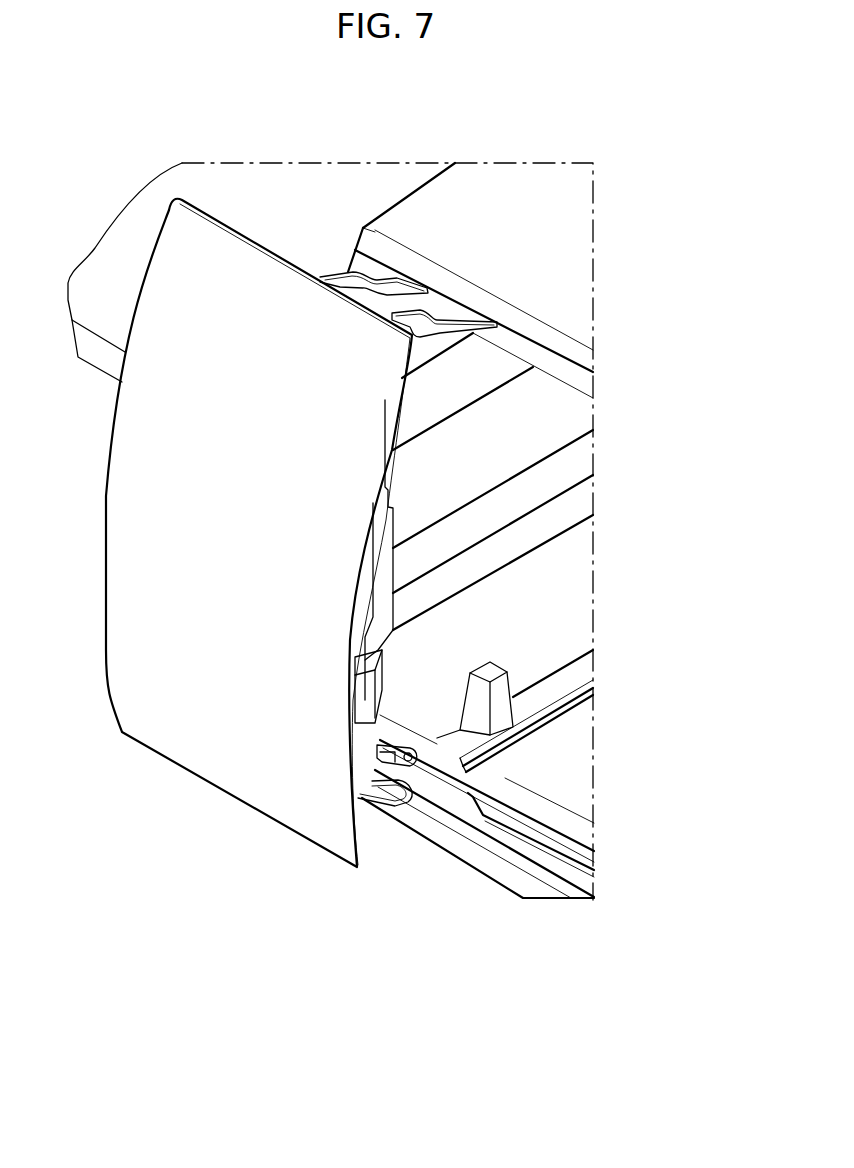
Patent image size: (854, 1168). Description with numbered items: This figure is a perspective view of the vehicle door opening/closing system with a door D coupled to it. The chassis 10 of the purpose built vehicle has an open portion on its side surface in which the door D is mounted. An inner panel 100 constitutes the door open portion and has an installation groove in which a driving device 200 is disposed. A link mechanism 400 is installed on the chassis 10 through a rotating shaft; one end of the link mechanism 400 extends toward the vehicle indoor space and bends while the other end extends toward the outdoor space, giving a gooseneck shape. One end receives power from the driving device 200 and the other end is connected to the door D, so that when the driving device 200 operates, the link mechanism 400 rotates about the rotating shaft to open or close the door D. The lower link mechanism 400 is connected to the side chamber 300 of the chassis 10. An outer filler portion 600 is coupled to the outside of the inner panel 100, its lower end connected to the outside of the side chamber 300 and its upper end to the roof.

The chassis 10 is at (249, 107).
The door D is at (194, 743).
The inner panel 100 is at (388, 683).
The driving device 200 is at (377, 750).
The side chamber 300 is at (462, 872).
The link mechanism 400 is at (445, 323).
The outer filler portion 600 is at (353, 682).